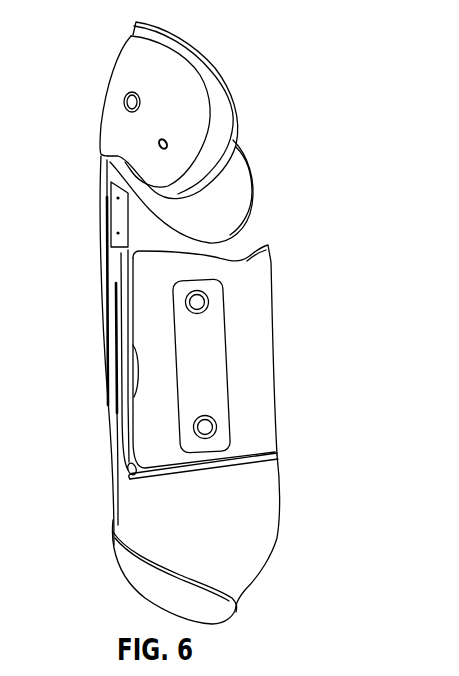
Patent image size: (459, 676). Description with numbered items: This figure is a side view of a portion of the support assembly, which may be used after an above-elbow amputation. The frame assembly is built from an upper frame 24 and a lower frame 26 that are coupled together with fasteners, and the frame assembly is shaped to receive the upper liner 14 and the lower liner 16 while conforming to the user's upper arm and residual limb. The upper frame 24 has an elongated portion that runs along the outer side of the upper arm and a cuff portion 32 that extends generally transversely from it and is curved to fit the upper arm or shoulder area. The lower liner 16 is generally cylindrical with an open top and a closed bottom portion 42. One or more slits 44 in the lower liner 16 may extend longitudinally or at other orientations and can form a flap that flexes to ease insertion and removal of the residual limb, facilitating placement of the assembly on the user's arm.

The upper liner 14 is at (222, 106).
The lower liner 16 is at (203, 360).
The upper frame 24 is at (133, 60).
The lower frame 26 is at (150, 587).
The cuff portion 32 is at (187, 133).
The bottom portion 42 is at (237, 527).
The slits 44 is at (277, 455).